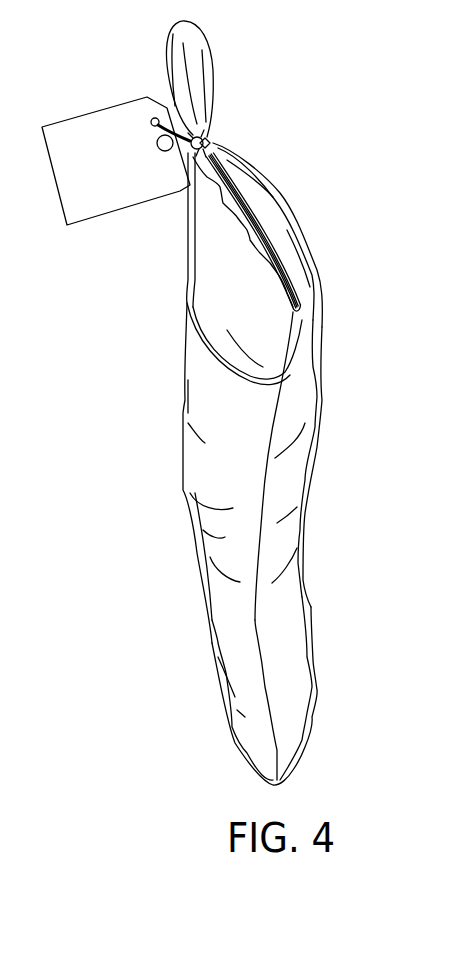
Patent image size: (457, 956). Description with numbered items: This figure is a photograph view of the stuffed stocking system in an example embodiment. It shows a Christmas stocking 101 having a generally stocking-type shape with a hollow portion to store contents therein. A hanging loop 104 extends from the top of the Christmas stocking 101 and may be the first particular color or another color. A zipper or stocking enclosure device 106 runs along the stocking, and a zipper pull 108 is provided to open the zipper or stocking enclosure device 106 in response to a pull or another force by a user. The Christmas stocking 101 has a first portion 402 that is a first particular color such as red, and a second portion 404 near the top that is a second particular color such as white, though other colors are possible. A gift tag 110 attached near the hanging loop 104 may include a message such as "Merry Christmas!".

The Christmas stocking 101 is at (309, 452).
The hanging loop 104 is at (203, 85).
The zipper or stocking enclosure device 106 is at (266, 214).
The zipper pull 108 is at (215, 142).
The gift tag 110 is at (95, 112).
The first portion 402 is at (313, 618).
The second portion 404 is at (313, 323).